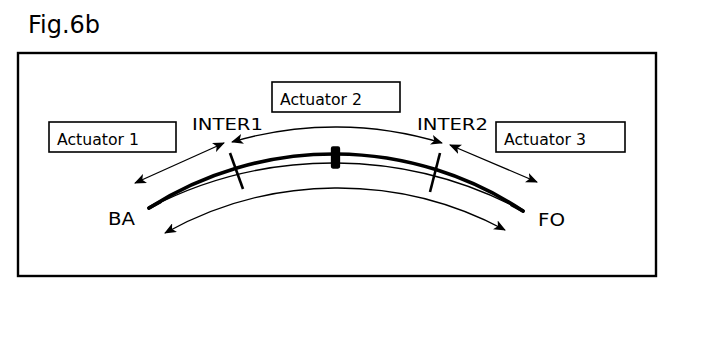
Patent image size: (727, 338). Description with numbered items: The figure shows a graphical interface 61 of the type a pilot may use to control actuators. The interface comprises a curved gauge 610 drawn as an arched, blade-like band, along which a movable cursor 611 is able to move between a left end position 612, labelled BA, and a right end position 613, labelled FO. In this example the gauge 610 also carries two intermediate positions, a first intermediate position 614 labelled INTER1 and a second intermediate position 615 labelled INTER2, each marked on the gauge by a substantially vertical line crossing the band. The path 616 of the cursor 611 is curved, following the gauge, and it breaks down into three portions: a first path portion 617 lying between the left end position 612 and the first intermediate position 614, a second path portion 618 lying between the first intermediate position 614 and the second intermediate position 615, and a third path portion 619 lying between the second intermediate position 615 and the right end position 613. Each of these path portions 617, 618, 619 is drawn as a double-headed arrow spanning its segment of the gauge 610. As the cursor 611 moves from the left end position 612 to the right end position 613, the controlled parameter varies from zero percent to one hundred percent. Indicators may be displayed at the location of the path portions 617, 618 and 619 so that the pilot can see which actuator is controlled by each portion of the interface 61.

The graphical interface 61 is at (333, 53).
The curved gauge 610 is at (200, 187).
The movable cursor 611 is at (338, 168).
The left end position 612 is at (144, 210).
The right end position 613 is at (523, 212).
The first intermediate position 614 is at (242, 189).
The second intermediate position 615 is at (437, 180).
The path 616 is at (306, 190).
The first path portion 617 is at (170, 167).
The second path portion 618 is at (403, 133).
The third path portion 619 is at (507, 169).